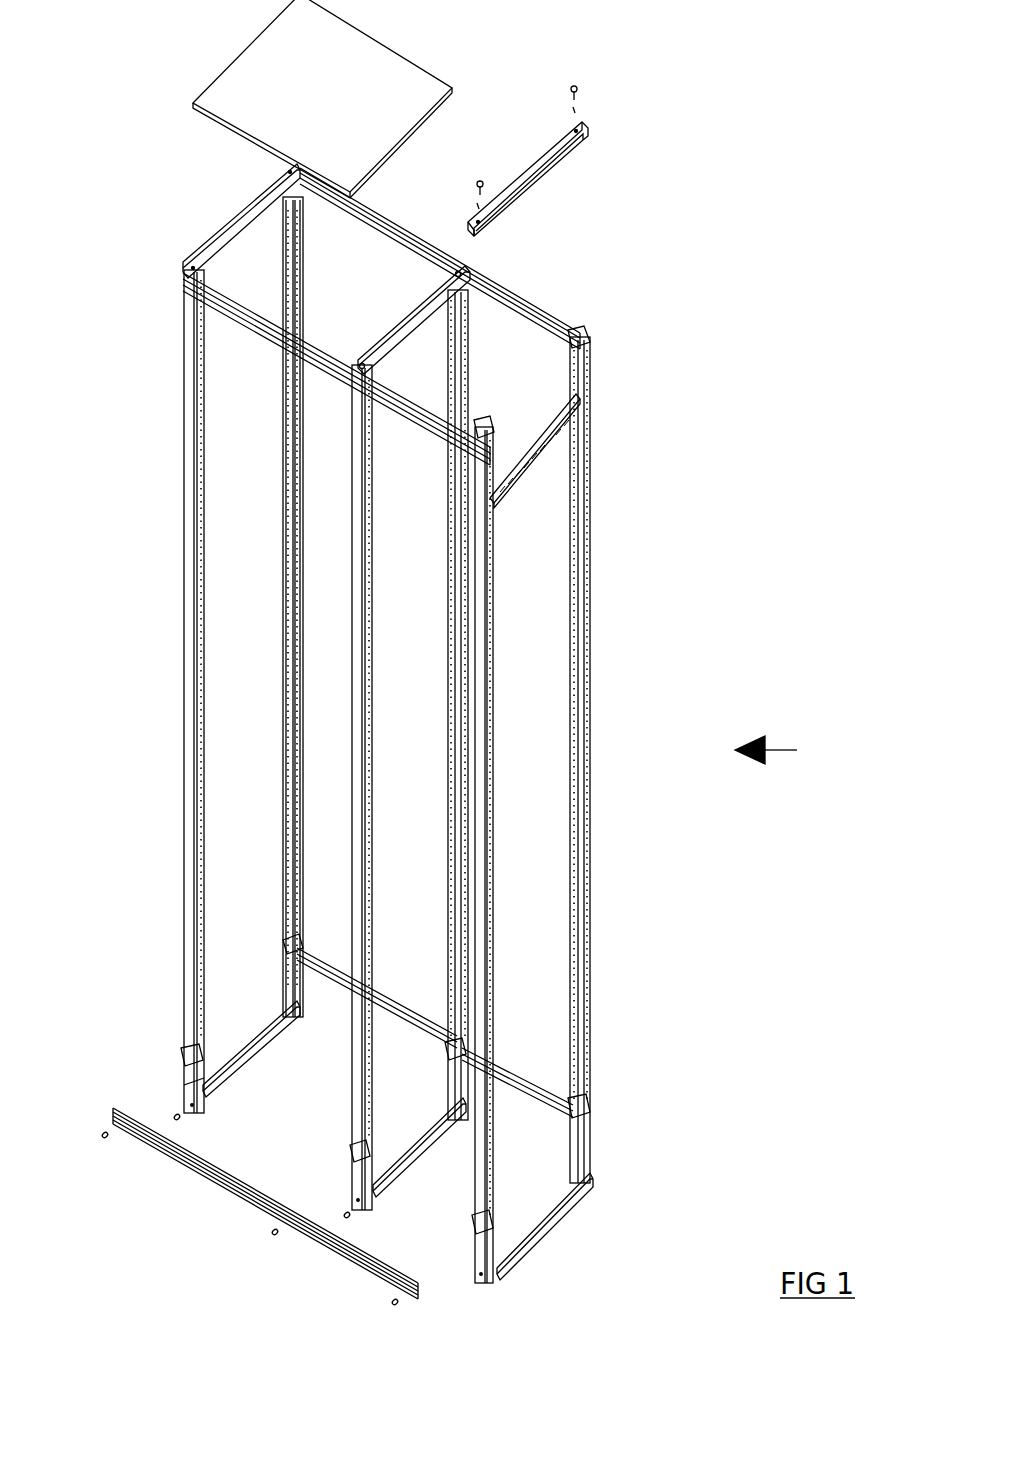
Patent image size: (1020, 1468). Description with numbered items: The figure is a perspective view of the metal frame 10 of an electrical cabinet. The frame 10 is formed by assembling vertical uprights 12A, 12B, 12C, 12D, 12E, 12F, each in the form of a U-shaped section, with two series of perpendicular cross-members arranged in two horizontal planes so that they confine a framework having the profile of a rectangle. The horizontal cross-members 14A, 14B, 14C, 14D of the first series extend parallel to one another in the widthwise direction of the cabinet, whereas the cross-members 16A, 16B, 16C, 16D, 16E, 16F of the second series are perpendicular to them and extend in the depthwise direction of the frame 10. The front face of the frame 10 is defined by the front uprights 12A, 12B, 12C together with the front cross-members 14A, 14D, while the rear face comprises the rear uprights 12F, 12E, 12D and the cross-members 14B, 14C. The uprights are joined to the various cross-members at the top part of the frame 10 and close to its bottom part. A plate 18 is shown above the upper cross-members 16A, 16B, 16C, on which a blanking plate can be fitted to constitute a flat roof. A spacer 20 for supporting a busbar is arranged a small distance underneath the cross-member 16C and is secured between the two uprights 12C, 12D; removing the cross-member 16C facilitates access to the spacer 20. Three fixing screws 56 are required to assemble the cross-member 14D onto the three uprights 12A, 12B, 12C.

The metal frame 10 is at (784, 749).
The vertical upright 12A is at (185, 722).
The vertical upright 12B is at (362, 792).
The vertical upright 12C is at (480, 1172).
The vertical upright 12D is at (594, 706).
The vertical upright 12E is at (468, 352).
The vertical upright 12F is at (284, 604).
The cross-member 14A is at (266, 330).
The cross-member 14B is at (510, 305).
The cross-member 14C is at (334, 980).
The cross-member 14D is at (165, 1156).
The cross-member 16A is at (246, 220).
The cross-member 16B is at (408, 322).
The cross-member 16C is at (545, 190).
The cross-member 16D is at (246, 1040).
The cross-member 16E is at (432, 1126).
The cross-member 16F is at (560, 1205).
The top panel 18 is at (400, 78).
The spacer 20 is at (500, 478).
The fixing screws 56 is at (388, 1300).